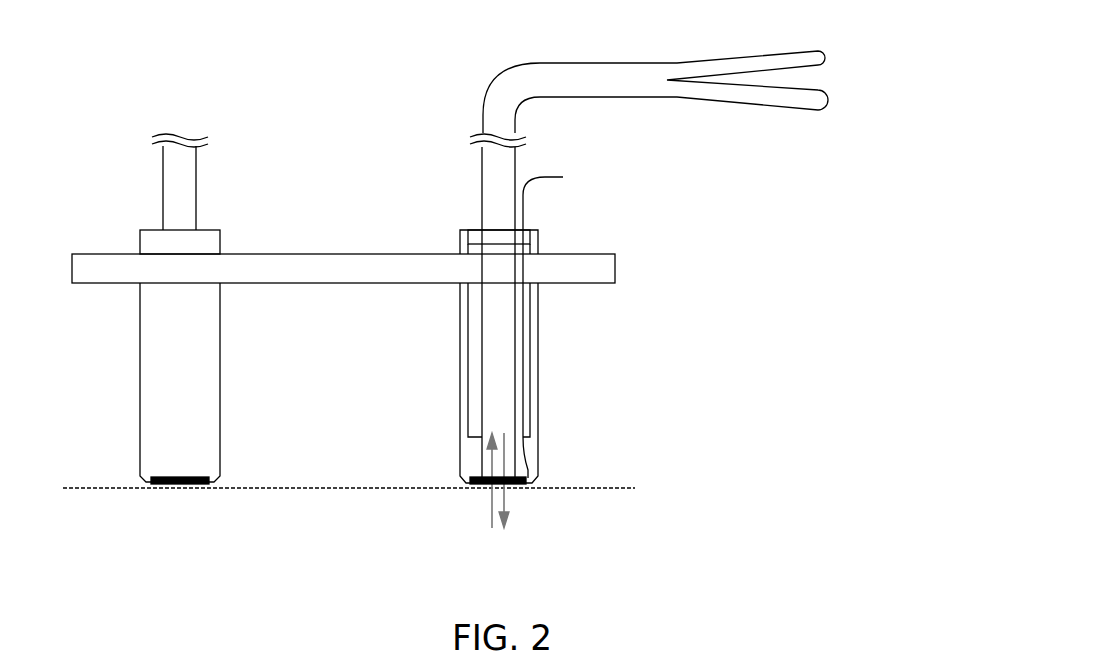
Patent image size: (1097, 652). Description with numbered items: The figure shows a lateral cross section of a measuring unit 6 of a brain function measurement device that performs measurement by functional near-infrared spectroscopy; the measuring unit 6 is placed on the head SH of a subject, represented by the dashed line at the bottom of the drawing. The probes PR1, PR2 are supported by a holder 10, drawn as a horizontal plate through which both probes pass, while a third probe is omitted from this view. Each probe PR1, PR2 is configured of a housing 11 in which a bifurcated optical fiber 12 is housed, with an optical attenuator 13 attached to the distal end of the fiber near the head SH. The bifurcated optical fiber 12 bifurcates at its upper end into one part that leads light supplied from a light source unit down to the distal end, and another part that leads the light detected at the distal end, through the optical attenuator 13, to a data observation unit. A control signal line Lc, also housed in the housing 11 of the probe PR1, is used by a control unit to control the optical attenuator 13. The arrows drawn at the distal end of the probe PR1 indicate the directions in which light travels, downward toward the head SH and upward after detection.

The measuring unit 6 is at (308, 99).
The holder 10 is at (616, 268).
The housing 11 is at (140, 366).
The bifurcated optical fiber 12 is at (577, 63).
The optical attenuator 13 is at (190, 487).
The probe PR1 is at (442, 386).
The probe PR2 is at (120, 326).
The head SH is at (317, 503).
The control signal line Lc is at (533, 192).